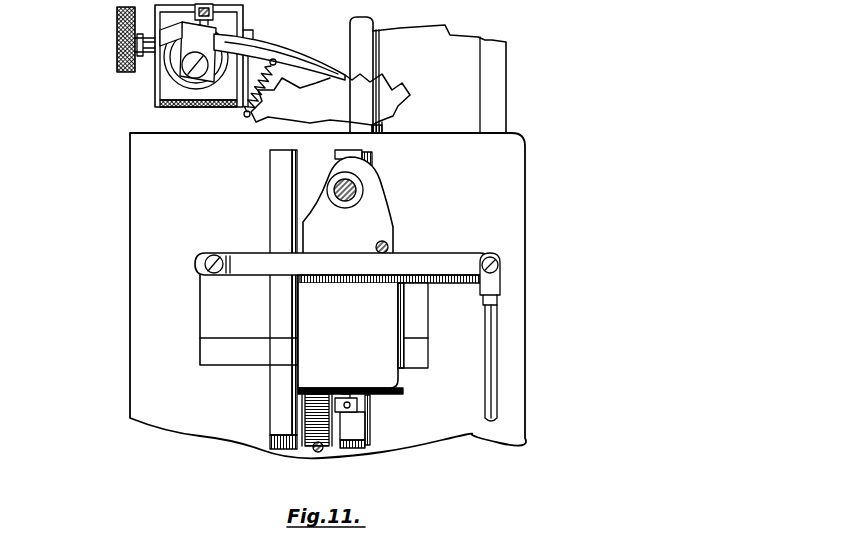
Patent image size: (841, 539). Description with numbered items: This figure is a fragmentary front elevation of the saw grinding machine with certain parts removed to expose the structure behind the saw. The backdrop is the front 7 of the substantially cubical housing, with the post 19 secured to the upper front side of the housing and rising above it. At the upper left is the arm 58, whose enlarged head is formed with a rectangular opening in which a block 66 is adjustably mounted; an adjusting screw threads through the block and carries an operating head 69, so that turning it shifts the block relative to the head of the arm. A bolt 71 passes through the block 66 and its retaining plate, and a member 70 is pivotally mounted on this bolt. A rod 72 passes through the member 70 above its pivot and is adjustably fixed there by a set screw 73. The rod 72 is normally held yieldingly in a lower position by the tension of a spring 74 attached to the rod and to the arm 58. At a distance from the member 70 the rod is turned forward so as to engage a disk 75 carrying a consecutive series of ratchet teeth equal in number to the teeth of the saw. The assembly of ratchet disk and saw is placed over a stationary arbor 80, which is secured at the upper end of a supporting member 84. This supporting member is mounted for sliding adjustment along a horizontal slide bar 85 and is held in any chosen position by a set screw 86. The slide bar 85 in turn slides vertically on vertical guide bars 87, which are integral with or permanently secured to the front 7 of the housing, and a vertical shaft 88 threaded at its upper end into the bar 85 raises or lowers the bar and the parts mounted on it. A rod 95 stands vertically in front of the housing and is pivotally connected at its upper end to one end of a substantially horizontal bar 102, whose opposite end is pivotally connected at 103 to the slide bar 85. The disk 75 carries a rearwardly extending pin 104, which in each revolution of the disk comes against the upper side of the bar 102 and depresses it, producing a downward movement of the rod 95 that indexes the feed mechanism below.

The front 7 is at (148, 303).
The post 19 is at (496, 94).
The arm 58 is at (190, 118).
The block 66 is at (172, 80).
The operating head 69 is at (119, 48).
The member 70 is at (185, 48).
The bolt 71 is at (196, 80).
The rod 72 is at (290, 66).
The set screw 73 is at (247, 18).
The spring 74 is at (273, 88).
The disk 75 is at (392, 106).
The stationary arbor 80 is at (360, 188).
The supporting member 84 is at (382, 372).
The slide bar 85 is at (267, 340).
The set screw 86 is at (358, 405).
The vertical guide bars 87 is at (277, 398).
The shaft 88 is at (313, 430).
The rod 95 is at (494, 366).
The bar 102 is at (446, 258).
The pivotal connection 103 is at (206, 271).
The pin 104 is at (392, 245).